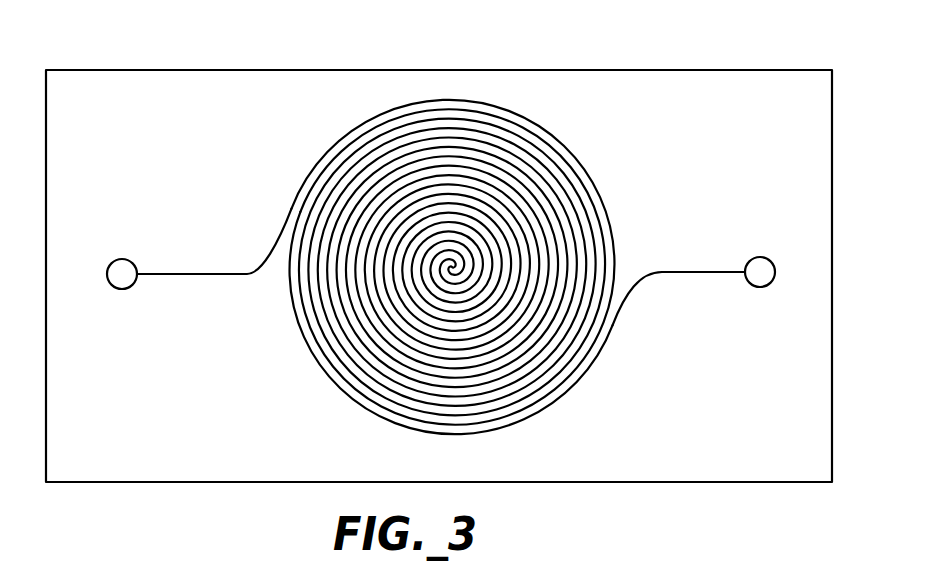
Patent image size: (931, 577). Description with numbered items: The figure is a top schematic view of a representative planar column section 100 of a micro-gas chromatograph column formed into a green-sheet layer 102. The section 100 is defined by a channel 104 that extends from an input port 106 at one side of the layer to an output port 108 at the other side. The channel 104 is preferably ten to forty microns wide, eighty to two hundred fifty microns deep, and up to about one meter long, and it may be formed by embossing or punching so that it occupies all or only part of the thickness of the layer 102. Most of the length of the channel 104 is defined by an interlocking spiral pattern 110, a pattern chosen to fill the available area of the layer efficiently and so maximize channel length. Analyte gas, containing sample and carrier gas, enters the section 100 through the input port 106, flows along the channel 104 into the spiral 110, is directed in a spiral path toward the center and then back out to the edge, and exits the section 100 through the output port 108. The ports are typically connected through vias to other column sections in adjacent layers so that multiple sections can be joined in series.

The planar column section 100 is at (421, 280).
The green-sheet layer 102 is at (566, 70).
The channel 104 is at (222, 276).
The input port 106 is at (121, 259).
The output port 108 is at (760, 257).
The interlocking spiral pattern 110 is at (393, 422).